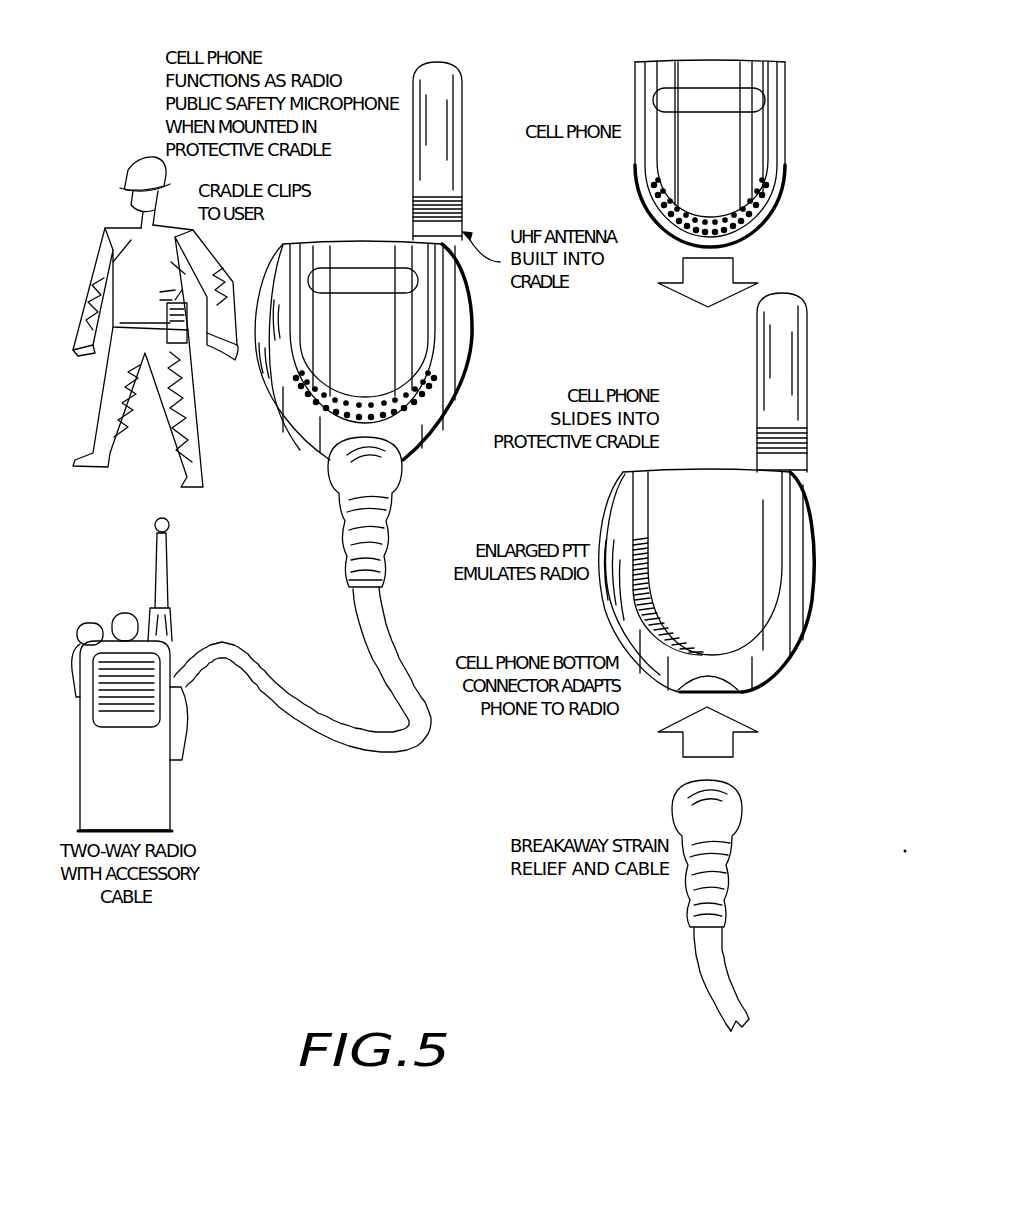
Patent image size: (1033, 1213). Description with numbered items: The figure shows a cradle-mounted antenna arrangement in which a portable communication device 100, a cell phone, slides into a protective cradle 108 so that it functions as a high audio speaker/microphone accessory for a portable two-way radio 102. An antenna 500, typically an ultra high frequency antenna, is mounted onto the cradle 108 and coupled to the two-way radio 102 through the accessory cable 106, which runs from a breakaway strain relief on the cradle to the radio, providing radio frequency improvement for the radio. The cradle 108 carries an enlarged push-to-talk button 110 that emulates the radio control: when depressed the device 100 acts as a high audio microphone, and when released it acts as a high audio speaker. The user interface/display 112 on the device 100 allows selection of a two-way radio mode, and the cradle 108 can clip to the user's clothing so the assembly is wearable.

The portable communication device 100 is at (365, 240).
The portable two-way radio 102 is at (172, 789).
The accessory cable 106 is at (352, 633).
The protective cradle 108 is at (418, 437).
The push-to-talk button 110 is at (598, 598).
The user interface/display 112 is at (405, 282).
The antenna 500 is at (462, 163).